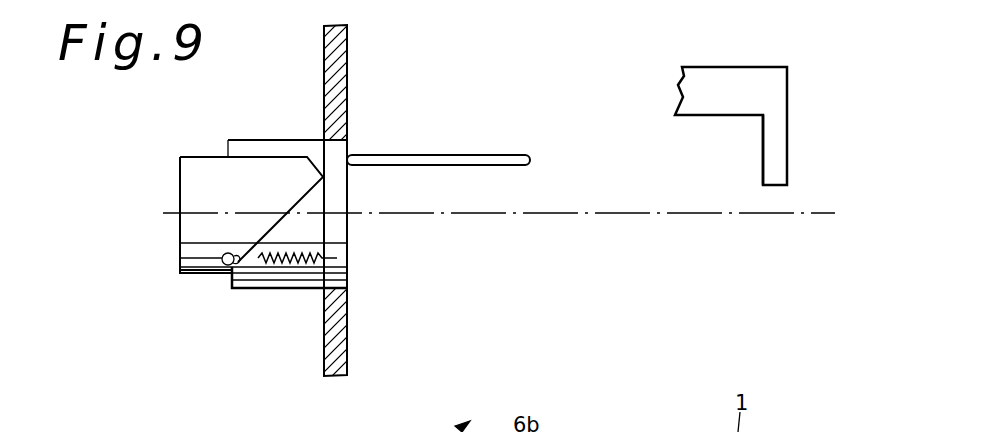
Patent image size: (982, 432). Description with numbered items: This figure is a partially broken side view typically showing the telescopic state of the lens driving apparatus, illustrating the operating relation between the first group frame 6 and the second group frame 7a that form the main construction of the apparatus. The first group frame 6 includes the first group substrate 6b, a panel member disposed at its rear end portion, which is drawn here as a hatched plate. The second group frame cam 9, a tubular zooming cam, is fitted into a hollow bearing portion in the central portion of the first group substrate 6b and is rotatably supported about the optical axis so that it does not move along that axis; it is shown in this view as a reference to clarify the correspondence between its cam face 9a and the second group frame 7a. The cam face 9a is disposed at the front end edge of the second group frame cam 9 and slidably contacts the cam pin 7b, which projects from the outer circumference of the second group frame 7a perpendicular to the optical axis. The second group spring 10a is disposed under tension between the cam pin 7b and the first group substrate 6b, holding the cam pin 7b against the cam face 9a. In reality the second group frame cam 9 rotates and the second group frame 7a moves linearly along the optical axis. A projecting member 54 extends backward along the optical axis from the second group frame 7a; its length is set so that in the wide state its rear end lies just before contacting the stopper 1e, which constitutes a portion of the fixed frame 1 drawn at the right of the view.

The fixed frame 1 is at (748, 65).
The stopper 1e is at (763, 155).
The first group frame 6 is at (340, 378).
The first group substrate 6b is at (348, 80).
The second group frame 7a is at (200, 275).
The cam pin 7b is at (222, 275).
The second group frame cam 9 is at (271, 140).
The cam face 9a is at (267, 226).
The second group spring 10a is at (303, 248).
The projecting member 54 is at (493, 153).